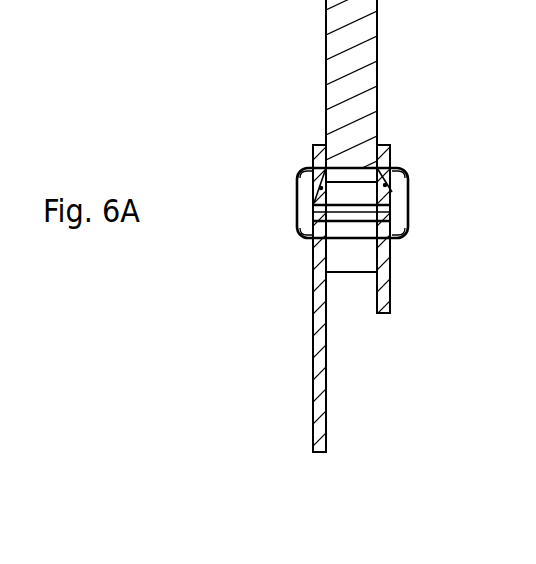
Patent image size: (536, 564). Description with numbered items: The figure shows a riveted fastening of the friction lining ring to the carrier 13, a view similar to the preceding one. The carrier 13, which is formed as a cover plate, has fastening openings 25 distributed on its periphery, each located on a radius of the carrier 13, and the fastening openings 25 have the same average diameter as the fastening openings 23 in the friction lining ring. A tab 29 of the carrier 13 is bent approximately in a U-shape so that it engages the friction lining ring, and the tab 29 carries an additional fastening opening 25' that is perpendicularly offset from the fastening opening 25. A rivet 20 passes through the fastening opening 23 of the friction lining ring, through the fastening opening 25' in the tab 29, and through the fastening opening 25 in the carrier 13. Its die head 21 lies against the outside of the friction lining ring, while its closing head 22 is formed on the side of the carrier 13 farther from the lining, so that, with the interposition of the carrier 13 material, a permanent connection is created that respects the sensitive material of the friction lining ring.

The carrier 13 is at (320, 368).
The rivet 20 is at (398, 220).
The die head 21 is at (398, 172).
The closing head 22 is at (302, 172).
The fastening opening 23 is at (350, 262).
The fastening opening 25 is at (280, 226).
The additional fastening opening 25' is at (441, 188).
The tab 29 is at (383, 280).